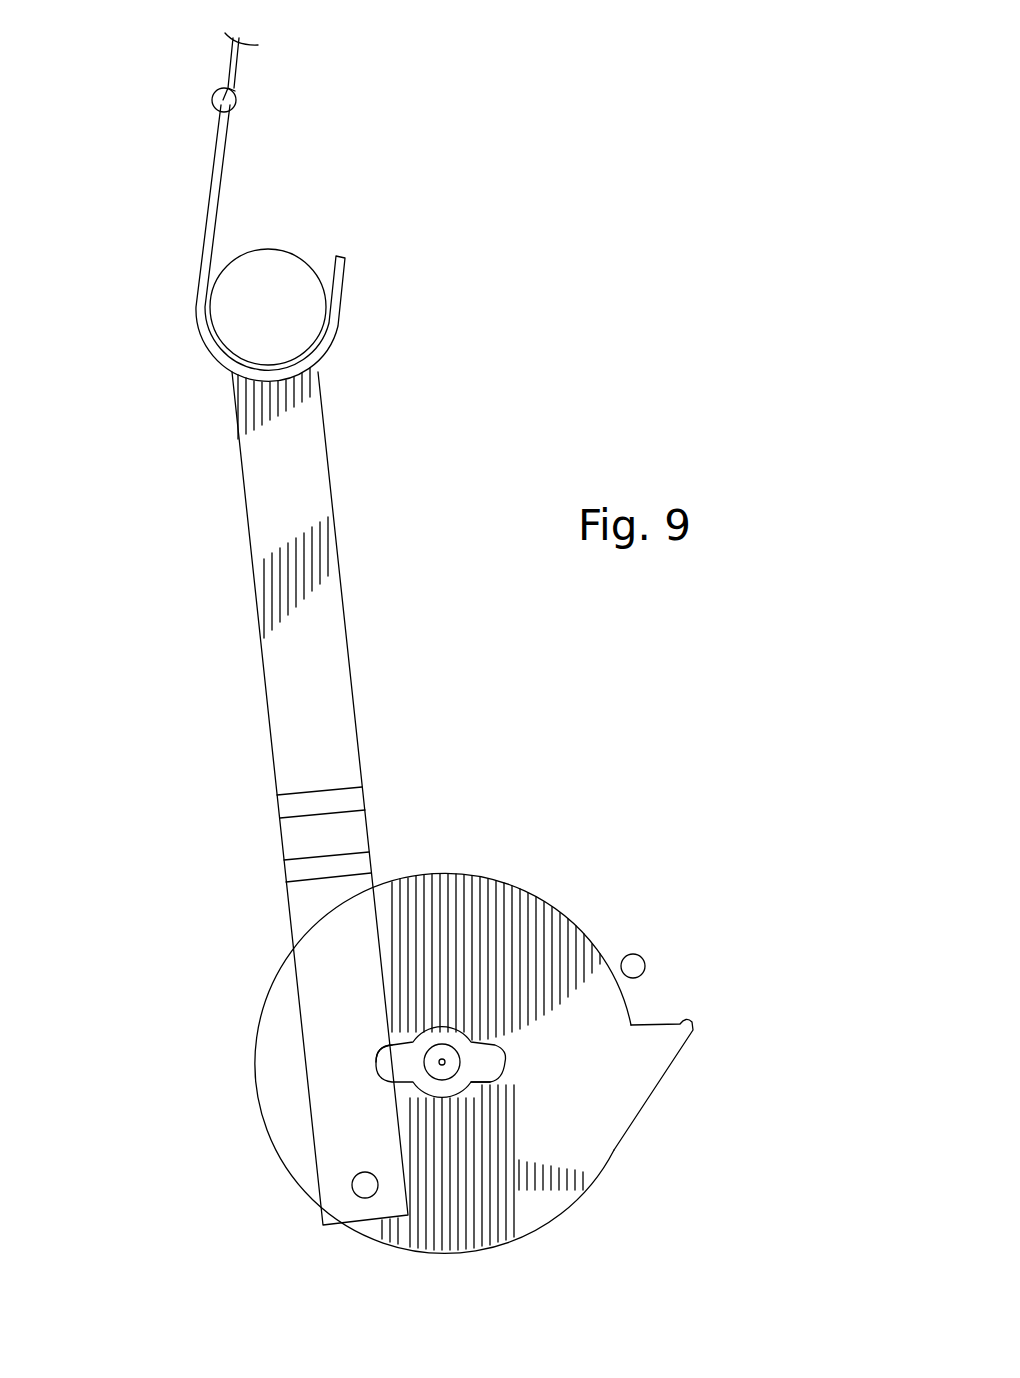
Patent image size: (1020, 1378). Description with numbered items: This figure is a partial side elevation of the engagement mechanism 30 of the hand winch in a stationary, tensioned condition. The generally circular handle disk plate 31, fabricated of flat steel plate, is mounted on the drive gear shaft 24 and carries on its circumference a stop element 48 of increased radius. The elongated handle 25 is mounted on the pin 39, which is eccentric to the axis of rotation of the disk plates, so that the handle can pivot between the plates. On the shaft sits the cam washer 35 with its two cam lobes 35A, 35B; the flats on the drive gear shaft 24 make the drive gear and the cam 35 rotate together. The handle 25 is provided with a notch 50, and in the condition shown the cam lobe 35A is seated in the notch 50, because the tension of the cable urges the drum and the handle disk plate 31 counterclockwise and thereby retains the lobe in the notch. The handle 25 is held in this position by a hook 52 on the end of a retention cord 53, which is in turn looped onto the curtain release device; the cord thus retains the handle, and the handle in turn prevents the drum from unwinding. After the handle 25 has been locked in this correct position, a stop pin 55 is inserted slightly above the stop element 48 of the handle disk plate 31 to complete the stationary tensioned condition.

The drive gear shaft 24 is at (442, 1068).
The handle assembly 25 is at (305, 710).
The engagement mechanism 30 is at (585, 869).
The handle disk plate 31 is at (580, 1135).
The cam washer 35 is at (457, 1040).
The cam lobe 35A is at (403, 1060).
The cam lobe 35B is at (500, 1072).
The pin 39 is at (352, 1185).
The stop element 48 is at (698, 1020).
The notch 50 is at (385, 1057).
The hook 52 is at (213, 183).
The retention cord 53 is at (243, 72).
The stop pin 55 is at (645, 962).